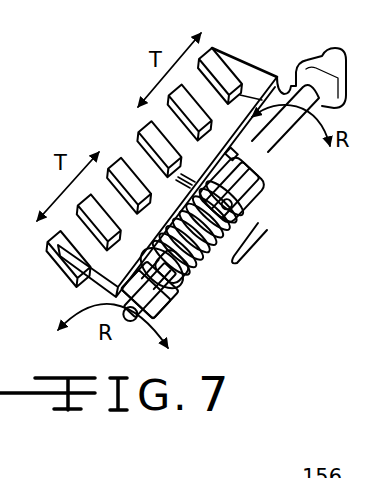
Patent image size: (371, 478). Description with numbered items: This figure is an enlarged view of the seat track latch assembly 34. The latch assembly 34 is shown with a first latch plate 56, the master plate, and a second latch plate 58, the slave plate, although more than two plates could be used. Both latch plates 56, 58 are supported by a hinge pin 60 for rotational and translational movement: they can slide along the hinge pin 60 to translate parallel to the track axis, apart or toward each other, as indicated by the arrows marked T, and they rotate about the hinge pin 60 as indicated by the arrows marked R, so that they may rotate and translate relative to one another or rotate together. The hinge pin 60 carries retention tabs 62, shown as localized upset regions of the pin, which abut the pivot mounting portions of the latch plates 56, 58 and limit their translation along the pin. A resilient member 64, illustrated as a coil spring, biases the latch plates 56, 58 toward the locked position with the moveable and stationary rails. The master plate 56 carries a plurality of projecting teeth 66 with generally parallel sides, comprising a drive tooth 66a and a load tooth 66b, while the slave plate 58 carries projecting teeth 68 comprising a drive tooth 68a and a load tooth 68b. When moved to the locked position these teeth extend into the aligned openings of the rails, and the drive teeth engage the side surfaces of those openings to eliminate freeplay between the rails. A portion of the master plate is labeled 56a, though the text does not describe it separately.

The seat track latch assembly 34 is at (256, 64).
The first latch plate 56 is at (100, 270).
The plate surface 56a is at (266, 103).
The second latch plate 58 is at (268, 95).
The hinge pin 60 is at (268, 137).
The retention tabs 62 is at (272, 191).
The resilient member 64 is at (216, 250).
The projecting teeth 66 is at (97, 184).
The drive tooth 66a is at (135, 168).
The load tooth 66b is at (104, 173).
The projecting teeth 68 is at (241, 54).
The drive tooth 68a is at (143, 133).
The load tooth 68b is at (184, 71).